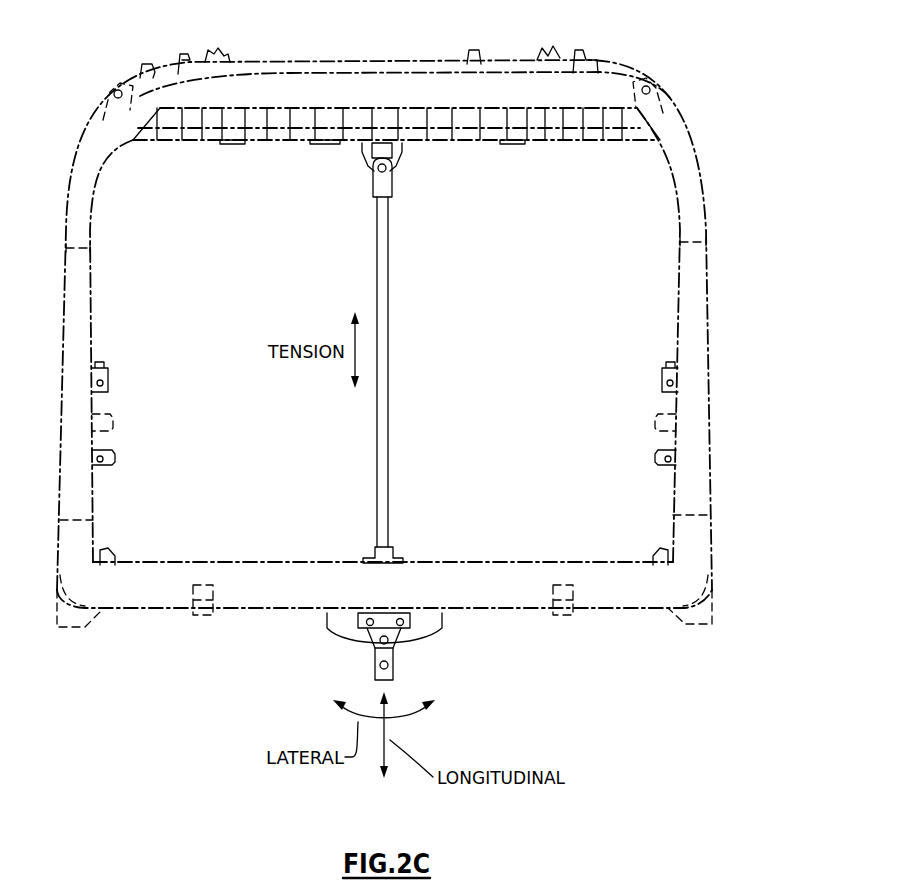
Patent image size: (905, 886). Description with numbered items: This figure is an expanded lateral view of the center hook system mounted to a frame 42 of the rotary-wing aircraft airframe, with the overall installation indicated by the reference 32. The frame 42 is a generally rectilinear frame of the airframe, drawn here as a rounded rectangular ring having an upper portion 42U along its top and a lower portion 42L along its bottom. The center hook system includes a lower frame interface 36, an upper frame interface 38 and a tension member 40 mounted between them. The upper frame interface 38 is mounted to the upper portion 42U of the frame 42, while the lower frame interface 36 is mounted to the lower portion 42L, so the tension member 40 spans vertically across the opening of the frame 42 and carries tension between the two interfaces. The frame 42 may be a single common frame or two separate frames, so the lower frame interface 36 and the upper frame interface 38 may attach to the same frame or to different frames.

The frame assembly 32 is at (418, 364).
The lower frame interface 36 is at (427, 562).
The upper frame interface 38 is at (423, 162).
The tension member 40 is at (403, 384).
The frame 42 is at (717, 263).
The upper portion of the frame 42U is at (386, 88).
The lower portion of the frame 42L is at (482, 593).